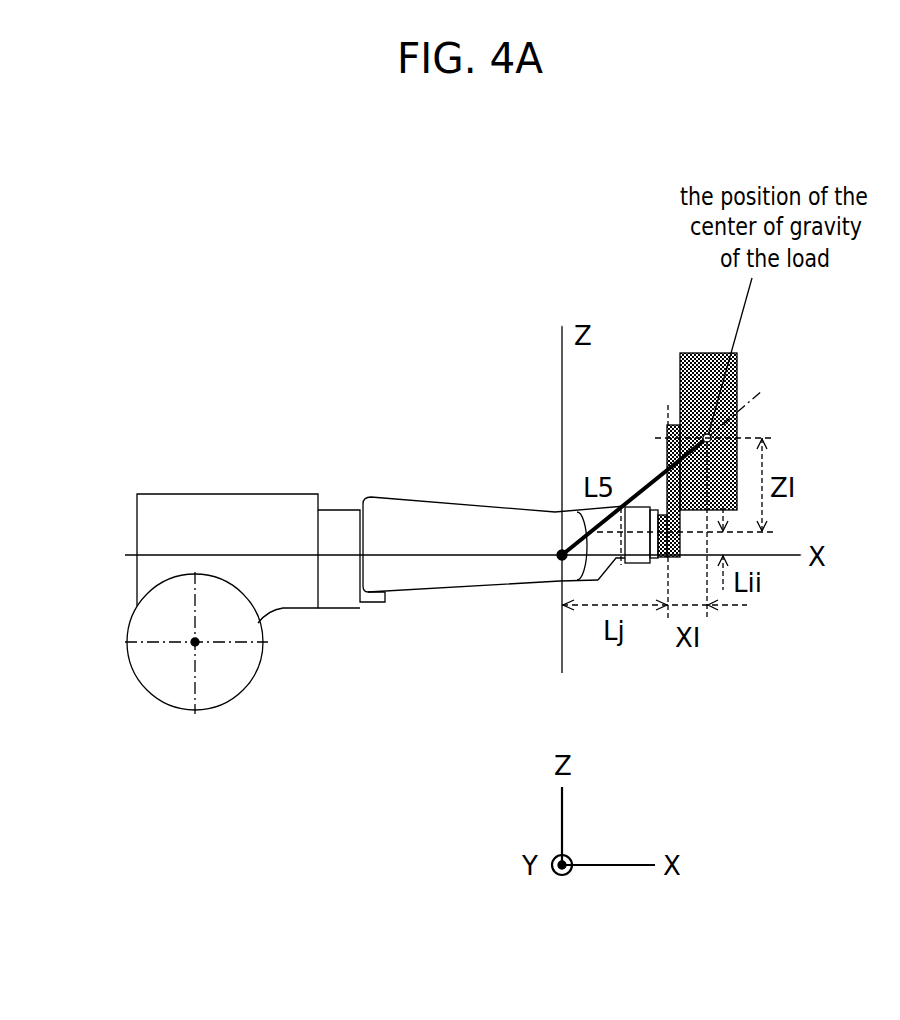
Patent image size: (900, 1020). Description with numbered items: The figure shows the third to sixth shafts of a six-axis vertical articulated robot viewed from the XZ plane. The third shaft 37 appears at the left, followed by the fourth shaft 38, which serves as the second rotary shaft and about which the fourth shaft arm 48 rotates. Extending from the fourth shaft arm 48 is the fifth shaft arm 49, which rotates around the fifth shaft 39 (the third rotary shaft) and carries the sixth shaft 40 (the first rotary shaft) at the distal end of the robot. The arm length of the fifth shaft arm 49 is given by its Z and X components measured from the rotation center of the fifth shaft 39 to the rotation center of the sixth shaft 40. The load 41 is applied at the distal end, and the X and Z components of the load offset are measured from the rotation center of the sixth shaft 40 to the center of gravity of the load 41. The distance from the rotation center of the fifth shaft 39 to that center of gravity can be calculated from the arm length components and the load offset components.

The third shaft 37 is at (207, 652).
The fourth shaft 38 is at (271, 523).
The fifth shaft 39 is at (555, 560).
The sixth shaft 40 is at (639, 543).
The load 41 is at (744, 368).
The fourth shaft arm 48 is at (437, 520).
The fifth shaft arm 49 is at (610, 542).